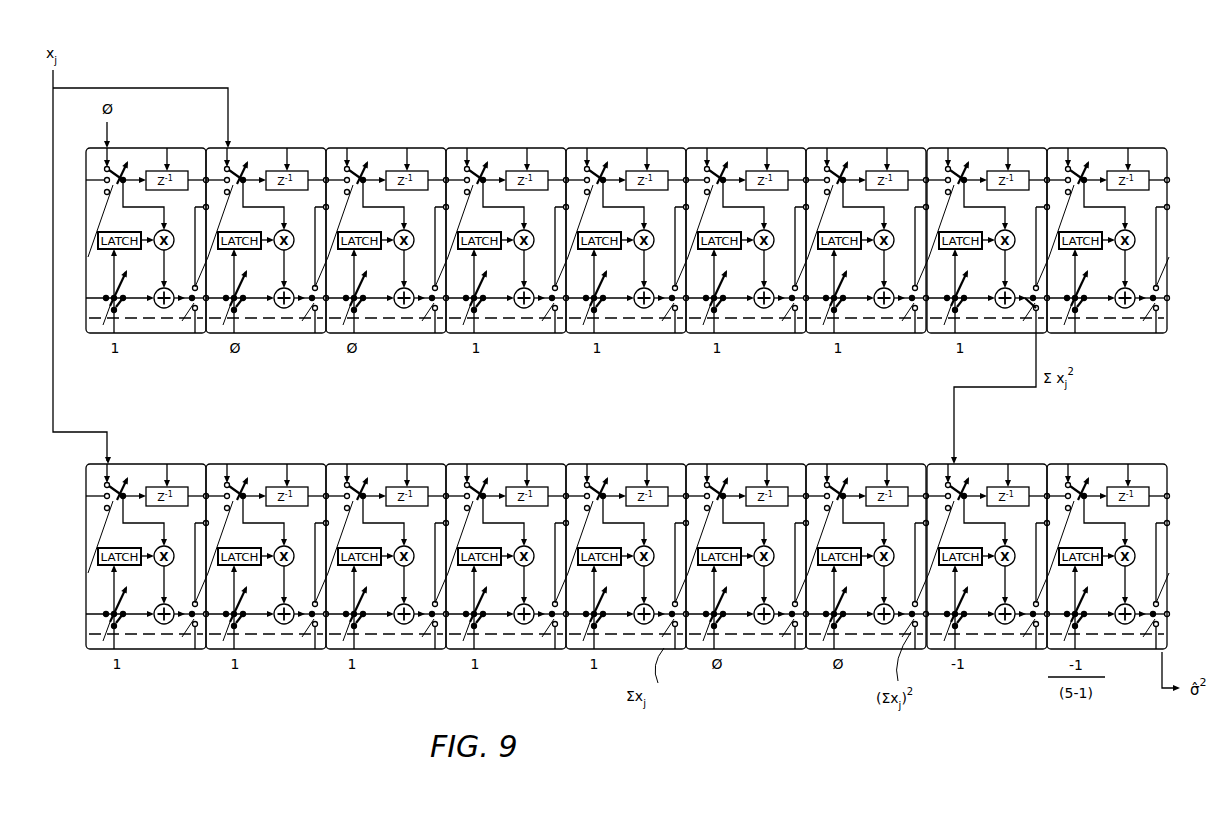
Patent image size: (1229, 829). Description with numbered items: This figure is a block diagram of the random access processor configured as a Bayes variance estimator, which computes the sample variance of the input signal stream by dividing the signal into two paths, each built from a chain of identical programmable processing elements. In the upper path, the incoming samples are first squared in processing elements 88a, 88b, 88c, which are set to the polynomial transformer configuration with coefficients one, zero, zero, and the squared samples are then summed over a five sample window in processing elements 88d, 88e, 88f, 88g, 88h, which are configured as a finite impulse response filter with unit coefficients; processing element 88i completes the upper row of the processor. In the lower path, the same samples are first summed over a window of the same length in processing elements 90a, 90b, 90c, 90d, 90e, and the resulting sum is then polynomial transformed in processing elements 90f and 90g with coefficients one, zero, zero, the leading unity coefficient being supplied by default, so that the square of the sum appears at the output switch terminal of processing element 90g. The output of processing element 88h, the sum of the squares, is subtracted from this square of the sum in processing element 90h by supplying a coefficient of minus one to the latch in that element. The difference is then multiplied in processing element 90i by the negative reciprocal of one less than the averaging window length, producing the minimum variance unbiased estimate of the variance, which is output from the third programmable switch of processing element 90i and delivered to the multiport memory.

The processing element 88a is at (183, 149).
The processing element 88b is at (298, 149).
The processing element 88c is at (427, 149).
The processing element 88d is at (542, 149).
The processing element 88e is at (675, 149).
The processing element 88f is at (788, 149).
The processing element 88g is at (912, 149).
The processing element 88h is at (1033, 149).
The processing element 88i is at (1135, 149).
The processing element 90a is at (183, 465).
The processing element 90b is at (303, 465).
The processing element 90c is at (423, 465).
The processing element 90d is at (545, 465).
The processing element 90e is at (676, 465).
The processing element 90f is at (788, 465).
The processing element 90g is at (915, 465).
The processing element 90h is at (1025, 465).
The processing element 90i is at (1130, 465).